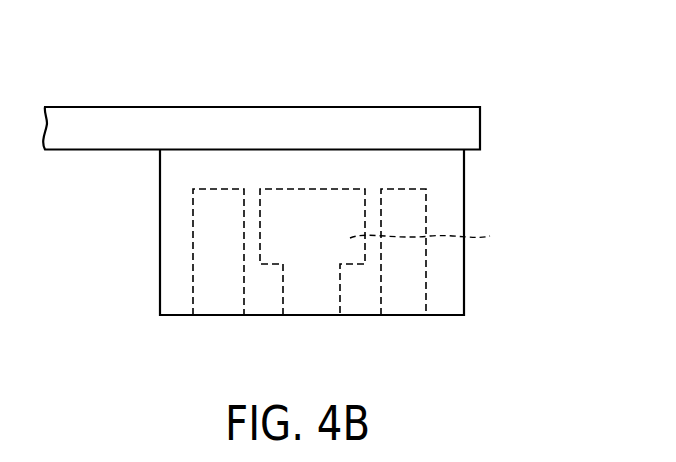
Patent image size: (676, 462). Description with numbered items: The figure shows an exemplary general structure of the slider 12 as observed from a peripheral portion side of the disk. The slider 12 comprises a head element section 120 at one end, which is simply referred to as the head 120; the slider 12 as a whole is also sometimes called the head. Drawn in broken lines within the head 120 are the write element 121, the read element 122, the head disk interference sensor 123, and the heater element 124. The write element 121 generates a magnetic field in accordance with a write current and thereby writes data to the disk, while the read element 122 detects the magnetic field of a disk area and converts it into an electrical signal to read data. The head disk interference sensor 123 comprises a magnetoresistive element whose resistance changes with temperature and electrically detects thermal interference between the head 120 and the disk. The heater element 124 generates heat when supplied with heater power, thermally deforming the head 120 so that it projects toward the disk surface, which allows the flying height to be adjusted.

The slider 12 is at (473, 88).
The head element section 120 is at (167, 192).
The write element 121 is at (404, 304).
The read element 122 is at (221, 304).
The head disk interference sensor 123 is at (311, 304).
The heater element 124 is at (438, 235).